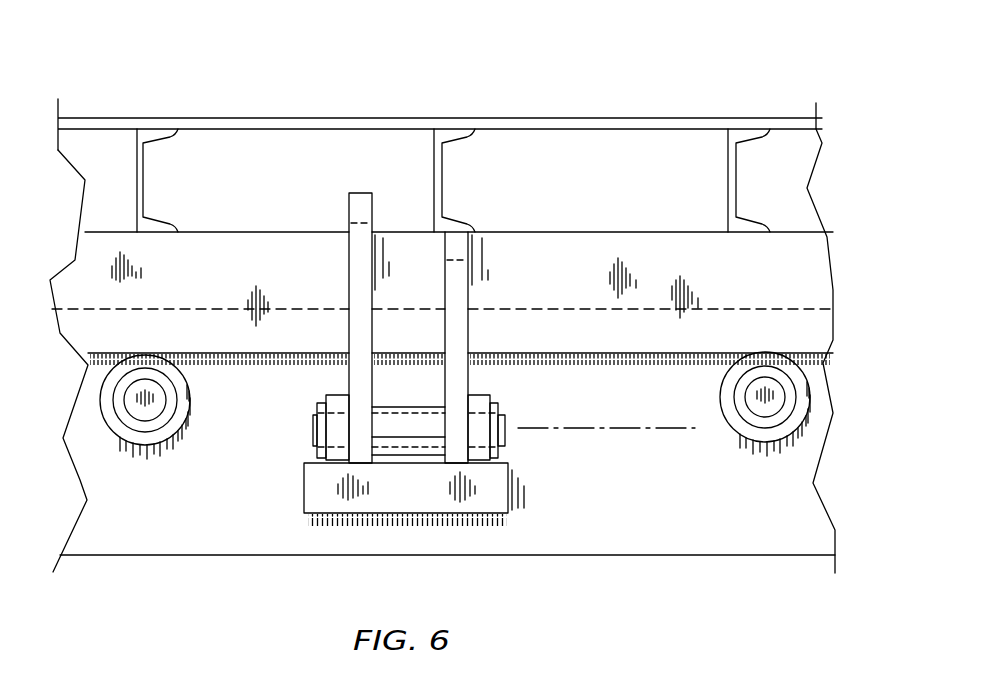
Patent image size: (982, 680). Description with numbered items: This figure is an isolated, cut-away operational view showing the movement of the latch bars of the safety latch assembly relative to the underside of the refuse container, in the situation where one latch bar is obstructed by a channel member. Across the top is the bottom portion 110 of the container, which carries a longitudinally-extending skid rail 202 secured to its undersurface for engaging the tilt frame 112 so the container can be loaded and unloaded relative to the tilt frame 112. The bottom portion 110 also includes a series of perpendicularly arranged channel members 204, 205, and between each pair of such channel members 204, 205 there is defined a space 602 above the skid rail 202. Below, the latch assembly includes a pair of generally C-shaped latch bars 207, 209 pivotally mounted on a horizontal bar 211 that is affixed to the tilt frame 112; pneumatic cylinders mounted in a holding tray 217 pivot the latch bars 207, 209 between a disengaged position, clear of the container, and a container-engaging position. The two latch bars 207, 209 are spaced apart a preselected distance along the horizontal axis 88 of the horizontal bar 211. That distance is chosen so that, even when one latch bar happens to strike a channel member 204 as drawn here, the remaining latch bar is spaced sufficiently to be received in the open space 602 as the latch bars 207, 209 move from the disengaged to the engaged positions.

The bottom portion 110 is at (703, 118).
The tilt frame 112 is at (640, 530).
The skid rail 202 is at (793, 257).
The channel member 204 is at (442, 183).
The channel member 205 is at (143, 183).
The space 602 is at (590, 168).
The latch bar 207 is at (357, 367).
The latch bar 209 is at (455, 373).
The horizontal bar 211 is at (310, 437).
The holding tray 217 is at (487, 507).
The horizontal axis 88 is at (635, 432).